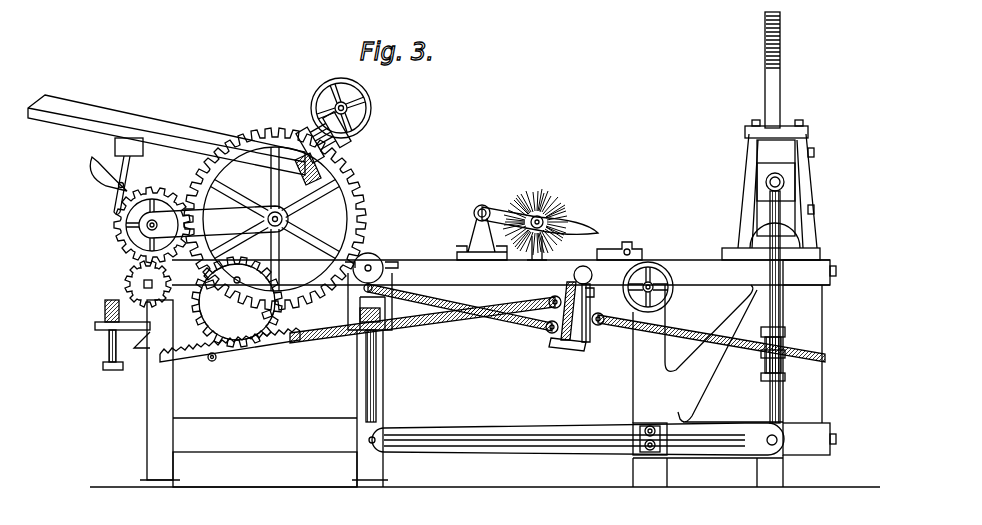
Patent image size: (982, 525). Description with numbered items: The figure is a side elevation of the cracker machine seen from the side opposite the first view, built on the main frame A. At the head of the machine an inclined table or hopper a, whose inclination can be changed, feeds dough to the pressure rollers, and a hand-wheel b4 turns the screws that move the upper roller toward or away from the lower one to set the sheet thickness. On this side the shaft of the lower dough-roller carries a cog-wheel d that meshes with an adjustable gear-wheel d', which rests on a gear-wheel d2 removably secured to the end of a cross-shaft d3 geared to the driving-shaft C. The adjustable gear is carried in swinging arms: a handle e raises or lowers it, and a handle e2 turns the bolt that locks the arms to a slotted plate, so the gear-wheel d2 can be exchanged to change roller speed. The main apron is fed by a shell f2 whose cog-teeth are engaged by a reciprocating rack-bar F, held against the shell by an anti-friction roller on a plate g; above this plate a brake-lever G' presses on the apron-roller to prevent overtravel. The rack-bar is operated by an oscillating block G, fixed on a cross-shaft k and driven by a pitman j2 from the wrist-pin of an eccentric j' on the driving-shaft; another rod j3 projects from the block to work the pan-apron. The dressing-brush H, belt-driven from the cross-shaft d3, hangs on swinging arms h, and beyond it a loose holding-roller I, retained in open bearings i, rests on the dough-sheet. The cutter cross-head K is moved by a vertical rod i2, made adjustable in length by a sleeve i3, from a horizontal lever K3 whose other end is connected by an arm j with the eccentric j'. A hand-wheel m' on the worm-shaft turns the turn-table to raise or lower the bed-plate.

The main frame A is at (485, 373).
The inclined table or hopper a is at (196, 140).
The hand-wheel b4 is at (364, 120).
The cog-wheel d is at (289, 219).
The adjustable gear-wheel d' is at (184, 225).
The gear-wheel d2 is at (128, 277).
The cross-shaft d3 is at (143, 284).
The handle e is at (106, 182).
The handle e2 is at (134, 170).
The brake-lever G' is at (101, 335).
The plate g is at (203, 361).
The shell f2 is at (223, 337).
The reciprocating rack-bar F is at (447, 318).
The driving-shaft C is at (374, 262).
The eccentric j' is at (405, 272).
The connecting-arm j is at (433, 307).
The pitman j2 is at (546, 328).
The rod j3 is at (712, 334).
The swinging arms h is at (498, 212).
The dressing-brush H is at (560, 203).
The holding-roller I is at (606, 251).
The open bearings i is at (637, 242).
The cross-shaft k is at (574, 275).
The oscillating block G is at (576, 327).
The hand-wheel m' is at (665, 342).
The cross-head K is at (760, 176).
The vertical rod i2 is at (770, 404).
The sleeve i3 is at (762, 360).
The horizontal lever K3 is at (520, 448).